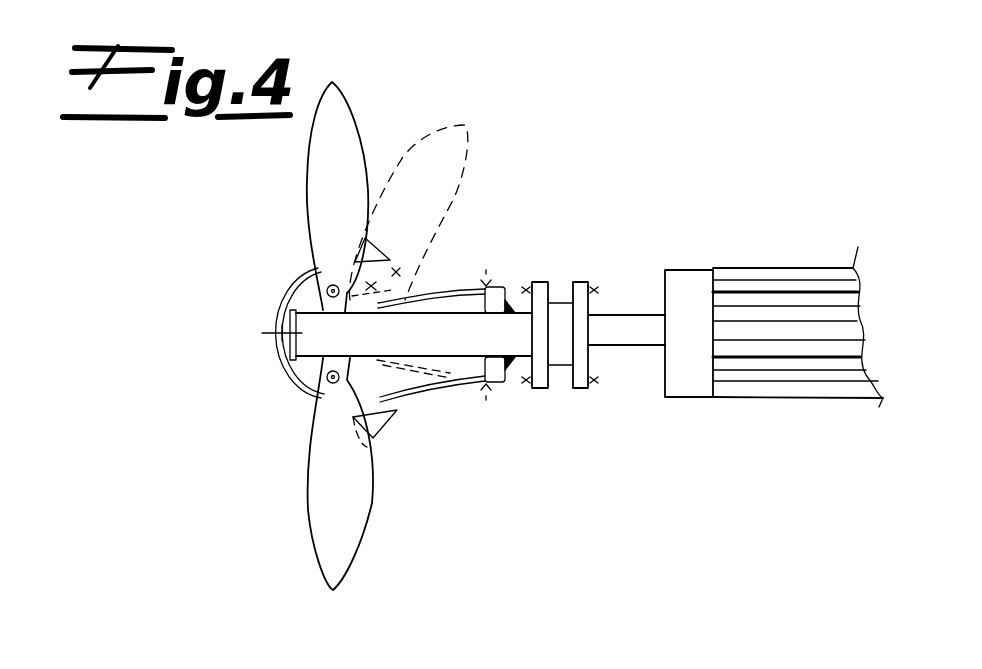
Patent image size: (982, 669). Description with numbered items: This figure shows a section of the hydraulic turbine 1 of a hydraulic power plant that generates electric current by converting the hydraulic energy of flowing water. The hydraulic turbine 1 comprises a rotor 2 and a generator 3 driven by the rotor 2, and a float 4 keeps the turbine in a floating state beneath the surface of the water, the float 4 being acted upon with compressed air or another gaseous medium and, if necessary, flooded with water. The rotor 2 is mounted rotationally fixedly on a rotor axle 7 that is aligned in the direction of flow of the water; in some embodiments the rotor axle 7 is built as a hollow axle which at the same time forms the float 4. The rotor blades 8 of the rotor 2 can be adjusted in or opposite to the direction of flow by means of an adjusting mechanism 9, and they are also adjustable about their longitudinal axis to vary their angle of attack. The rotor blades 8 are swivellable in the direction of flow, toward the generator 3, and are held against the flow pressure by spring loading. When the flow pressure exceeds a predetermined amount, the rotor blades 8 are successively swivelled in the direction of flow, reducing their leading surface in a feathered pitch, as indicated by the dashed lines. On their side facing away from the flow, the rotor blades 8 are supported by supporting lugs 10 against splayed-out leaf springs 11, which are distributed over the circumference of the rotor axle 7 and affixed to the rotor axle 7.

The hydraulic turbine 1 is at (692, 488).
The rotor 2 is at (310, 532).
The generator 3 is at (743, 283).
The float 4 is at (517, 363).
The rotor axle 7 is at (452, 327).
The rotor blades 8 is at (405, 157).
The adjusting mechanism 9 is at (462, 427).
The supporting lugs 10 is at (375, 420).
The leaf springs 11 is at (437, 293).